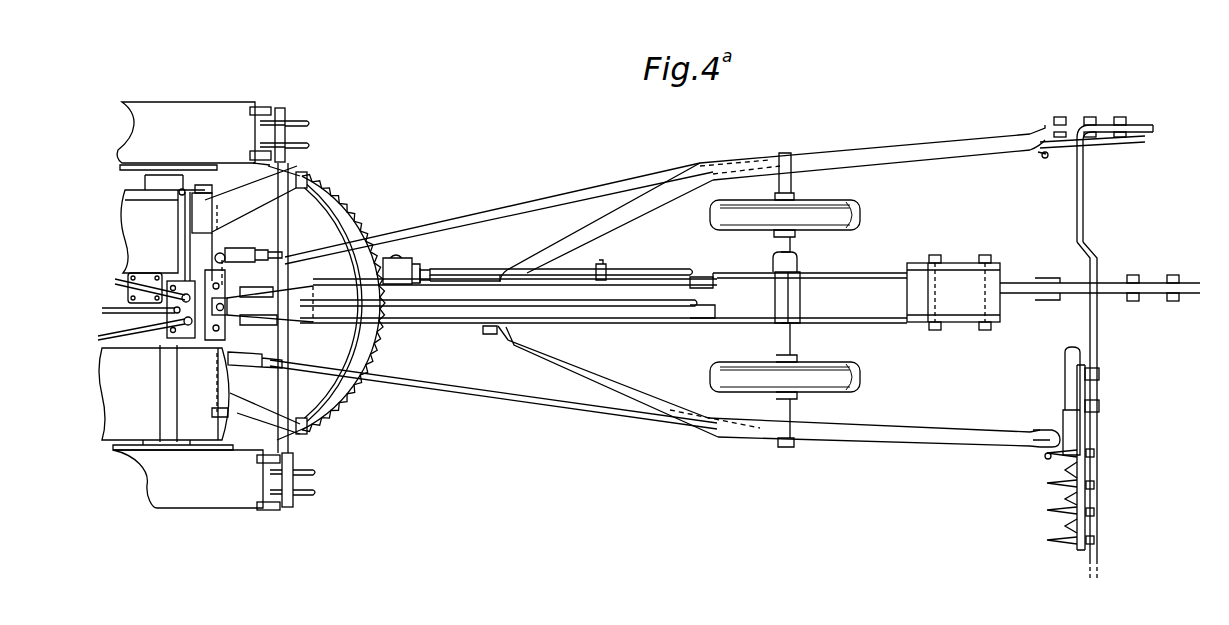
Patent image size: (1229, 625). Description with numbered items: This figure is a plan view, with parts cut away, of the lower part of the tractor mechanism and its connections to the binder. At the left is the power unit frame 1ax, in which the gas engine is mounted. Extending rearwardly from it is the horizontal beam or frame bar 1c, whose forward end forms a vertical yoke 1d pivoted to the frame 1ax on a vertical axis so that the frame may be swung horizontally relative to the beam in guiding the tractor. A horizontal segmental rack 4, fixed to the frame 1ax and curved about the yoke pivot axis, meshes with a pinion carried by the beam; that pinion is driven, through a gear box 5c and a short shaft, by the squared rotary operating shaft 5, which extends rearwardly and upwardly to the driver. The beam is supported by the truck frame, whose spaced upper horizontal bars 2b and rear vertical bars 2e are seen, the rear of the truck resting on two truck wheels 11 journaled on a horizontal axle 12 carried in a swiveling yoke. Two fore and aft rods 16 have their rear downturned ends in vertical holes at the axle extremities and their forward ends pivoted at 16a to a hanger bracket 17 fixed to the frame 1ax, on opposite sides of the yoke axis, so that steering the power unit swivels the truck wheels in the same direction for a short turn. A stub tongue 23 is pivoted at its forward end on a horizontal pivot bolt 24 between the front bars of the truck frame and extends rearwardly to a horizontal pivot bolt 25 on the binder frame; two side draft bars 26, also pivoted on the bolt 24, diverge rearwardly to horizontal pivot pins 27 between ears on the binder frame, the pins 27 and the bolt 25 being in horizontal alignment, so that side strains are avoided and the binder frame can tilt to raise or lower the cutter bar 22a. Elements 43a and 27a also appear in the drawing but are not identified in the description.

The fore and aft extending rods 16 is at (172, 118).
The horizontal beam or frame bar 1c is at (710, 265).
The frame 1ax is at (159, 264).
The hanger bracket 17 is at (216, 275).
The pivot of rods 16a is at (224, 256).
The horizontal segmental rack 4 is at (358, 228).
The vertical yoke 1d is at (294, 287).
The upper horizontal bars 2b is at (740, 273).
The stub tongue 23 is at (745, 300).
The squared rotary operating shaft 5 is at (478, 270).
The gear box 5c is at (408, 258).
The collar 43a is at (653, 268).
The horizontal pivot bolt 24 is at (489, 335).
The side draft bars 26 is at (553, 243).
The horizontal axle 12 is at (792, 181).
The truck wheels 11 is at (855, 206).
The rear vertical bars 2e is at (801, 276).
The horizontal pivot bolt 25 is at (1040, 302).
The horizontal pivot pins 27 is at (1048, 130).
The pivot pin 27a is at (1030, 132).
The cutter bar 22a is at (1060, 487).